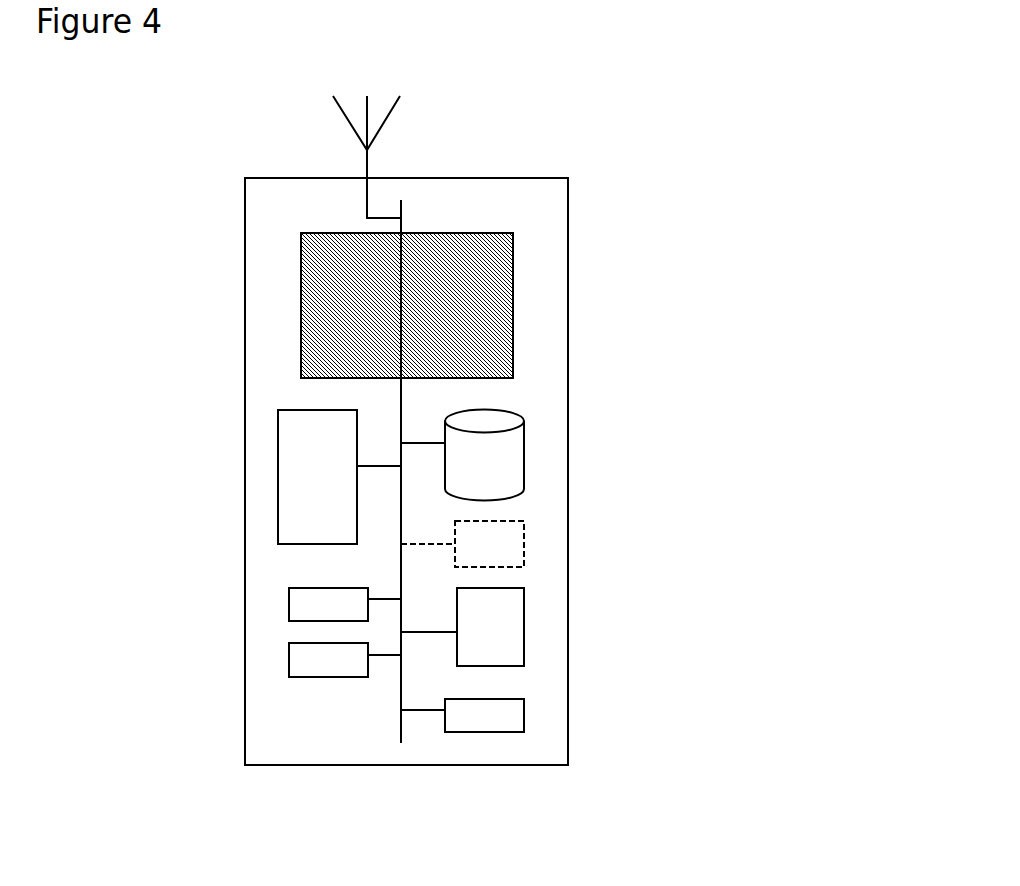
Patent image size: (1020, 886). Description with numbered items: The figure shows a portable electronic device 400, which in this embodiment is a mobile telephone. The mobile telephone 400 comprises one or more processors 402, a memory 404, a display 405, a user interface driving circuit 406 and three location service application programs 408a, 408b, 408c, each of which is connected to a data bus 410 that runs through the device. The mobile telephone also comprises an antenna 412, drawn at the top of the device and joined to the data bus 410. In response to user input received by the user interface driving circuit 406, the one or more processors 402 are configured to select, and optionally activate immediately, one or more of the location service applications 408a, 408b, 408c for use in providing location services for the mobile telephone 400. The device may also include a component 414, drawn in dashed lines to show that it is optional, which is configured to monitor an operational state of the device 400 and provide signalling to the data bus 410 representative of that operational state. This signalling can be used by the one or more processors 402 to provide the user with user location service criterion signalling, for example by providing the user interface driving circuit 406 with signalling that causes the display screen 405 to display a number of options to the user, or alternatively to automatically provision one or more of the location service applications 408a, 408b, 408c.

The portable electronic device 400 is at (579, 153).
The processors 402 is at (278, 470).
The memory 404 is at (525, 436).
The display 405 is at (513, 300).
The user interface driving circuit 406 is at (525, 620).
The location service application program 408a is at (289, 604).
The location service application program 408b is at (289, 662).
The location service application program 408c is at (525, 713).
The data bus 410 is at (400, 728).
The antenna 412 is at (366, 162).
The component 414 is at (525, 544).